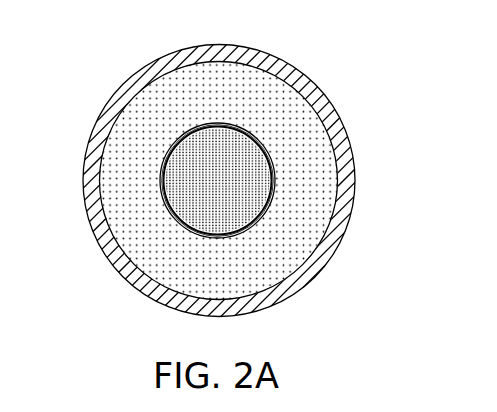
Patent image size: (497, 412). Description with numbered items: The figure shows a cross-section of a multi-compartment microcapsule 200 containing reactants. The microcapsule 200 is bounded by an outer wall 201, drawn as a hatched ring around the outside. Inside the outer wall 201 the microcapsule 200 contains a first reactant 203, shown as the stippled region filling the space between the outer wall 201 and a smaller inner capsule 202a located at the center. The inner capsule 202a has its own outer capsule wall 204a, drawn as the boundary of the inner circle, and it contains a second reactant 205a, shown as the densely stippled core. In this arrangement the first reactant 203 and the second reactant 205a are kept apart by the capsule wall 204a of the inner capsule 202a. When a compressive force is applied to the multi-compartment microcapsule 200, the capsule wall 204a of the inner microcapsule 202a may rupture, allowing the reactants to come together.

The microcapsule 200 is at (322, 73).
The outer wall 201 is at (95, 153).
The inner capsule 202a is at (193, 123).
The first reactant 203 is at (283, 267).
The outer capsule wall 204a is at (275, 166).
The second reactant 205a is at (243, 187).